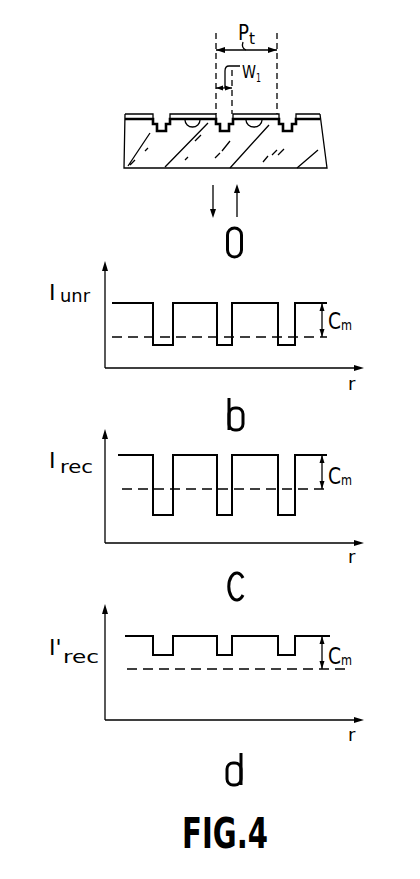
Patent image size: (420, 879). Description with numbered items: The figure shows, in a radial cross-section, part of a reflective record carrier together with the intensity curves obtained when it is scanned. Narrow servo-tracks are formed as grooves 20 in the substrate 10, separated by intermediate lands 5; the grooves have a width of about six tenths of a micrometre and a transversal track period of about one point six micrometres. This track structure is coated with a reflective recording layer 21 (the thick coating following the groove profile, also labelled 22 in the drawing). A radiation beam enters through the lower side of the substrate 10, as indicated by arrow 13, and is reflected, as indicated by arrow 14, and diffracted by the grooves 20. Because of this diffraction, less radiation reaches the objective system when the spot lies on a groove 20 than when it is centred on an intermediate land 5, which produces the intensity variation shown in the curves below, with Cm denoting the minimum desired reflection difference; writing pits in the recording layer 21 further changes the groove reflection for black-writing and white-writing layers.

The substrate 10 is at (225, 161).
The reflective recording layer 21 is at (137, 114).
The recording layer 22 is at (163, 128).
The intermediate land 5 is at (186, 118).
The grooves 20 is at (172, 134).
The arrow (reflected radiation) 14 is at (200, 200).
The arrow (incident radiation beam) 13 is at (249, 200).